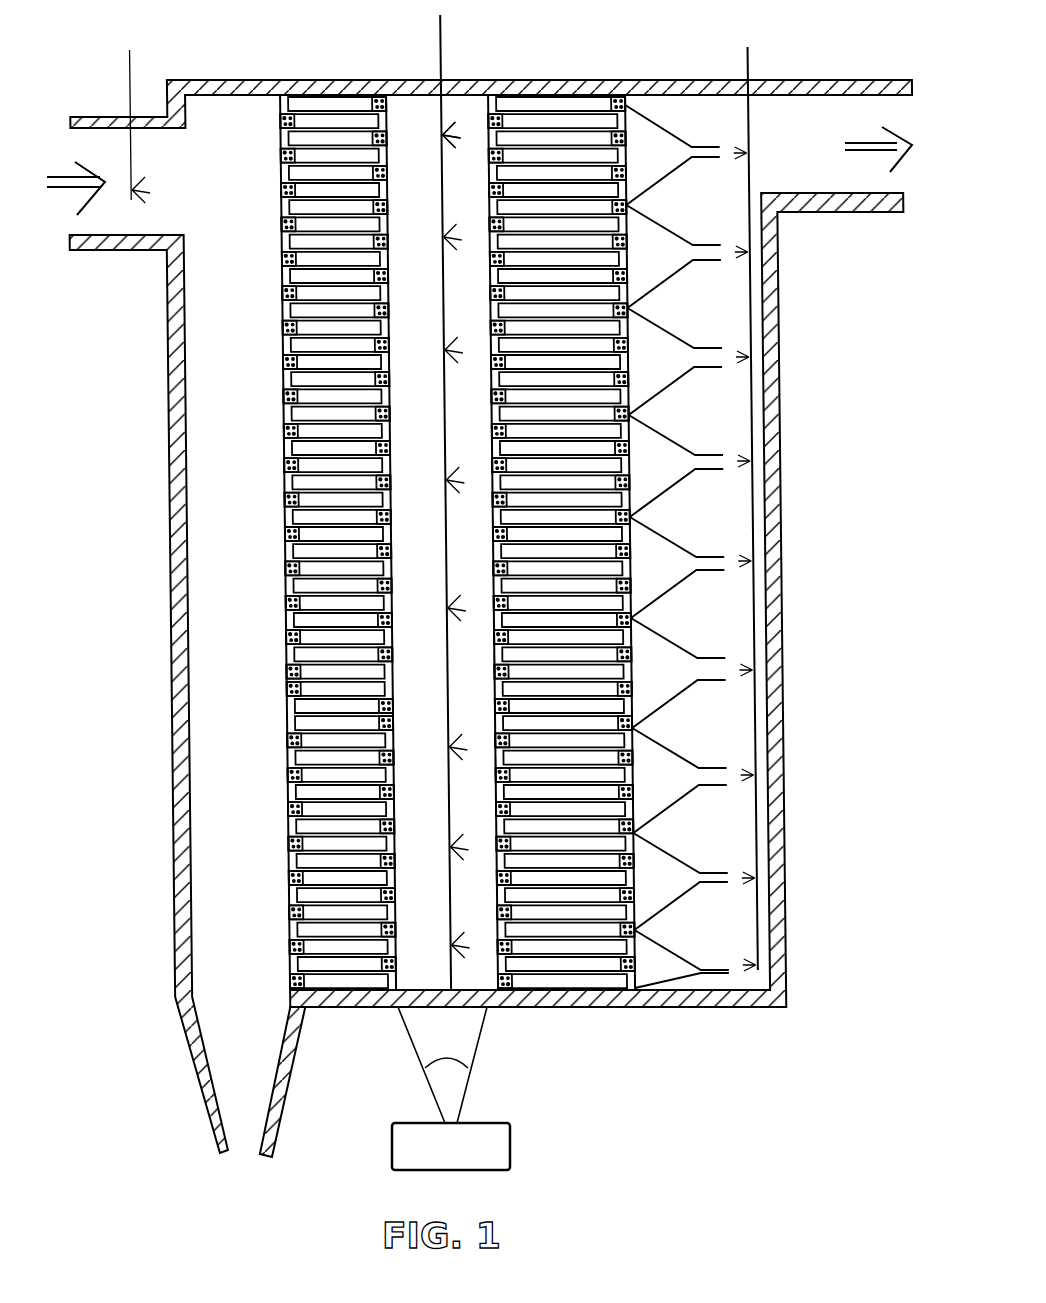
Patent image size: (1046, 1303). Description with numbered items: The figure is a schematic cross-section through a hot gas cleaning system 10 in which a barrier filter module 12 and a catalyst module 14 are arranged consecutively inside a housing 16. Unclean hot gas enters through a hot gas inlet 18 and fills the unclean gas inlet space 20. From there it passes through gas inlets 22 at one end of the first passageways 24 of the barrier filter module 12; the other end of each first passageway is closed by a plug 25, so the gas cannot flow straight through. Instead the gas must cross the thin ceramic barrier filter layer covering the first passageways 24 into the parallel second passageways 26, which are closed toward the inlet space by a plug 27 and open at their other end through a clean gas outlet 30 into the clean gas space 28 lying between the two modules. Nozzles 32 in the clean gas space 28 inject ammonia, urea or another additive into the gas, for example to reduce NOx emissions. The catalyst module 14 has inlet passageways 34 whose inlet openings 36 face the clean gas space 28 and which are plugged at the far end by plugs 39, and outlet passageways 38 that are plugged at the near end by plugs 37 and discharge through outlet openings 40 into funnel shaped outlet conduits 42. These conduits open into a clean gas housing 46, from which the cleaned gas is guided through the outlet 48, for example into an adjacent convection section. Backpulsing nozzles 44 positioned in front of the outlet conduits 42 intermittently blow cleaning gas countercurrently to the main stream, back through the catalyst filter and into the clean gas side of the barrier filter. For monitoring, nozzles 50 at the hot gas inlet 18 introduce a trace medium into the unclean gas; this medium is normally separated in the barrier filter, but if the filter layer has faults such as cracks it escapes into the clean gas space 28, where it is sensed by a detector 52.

The hot gas cleaning system 10 is at (150, 582).
The barrier filter module 12 is at (307, 137).
The catalyst module 14 is at (547, 157).
The housing 16 is at (181, 676).
The hot gas inlet 18 is at (112, 215).
The unclean gas inlet space 20 is at (238, 548).
The gas inlets 22 is at (287, 733).
The first passageways 24 is at (290, 722).
The plug 25 is at (380, 203).
The second passageways 26 is at (370, 673).
The plug 27 is at (283, 602).
The clean gas space 28 is at (406, 546).
The clean gas outlet 30 is at (390, 643).
The nozzles 32 is at (448, 133).
The inlet passageways 34 is at (500, 765).
The inlet openings 36 is at (495, 660).
The plug 37 is at (633, 862).
The outlet passageways 38 is at (593, 784).
The plug 39 is at (500, 877).
The outlet openings 40 is at (633, 735).
The outlet conduits 42 is at (667, 559).
The backpulsing nozzles 44 is at (746, 570).
The clean gas housing 46 is at (727, 430).
The outlet 48 is at (822, 127).
The nozzles 50 is at (130, 143).
The detector 52 is at (510, 1143).